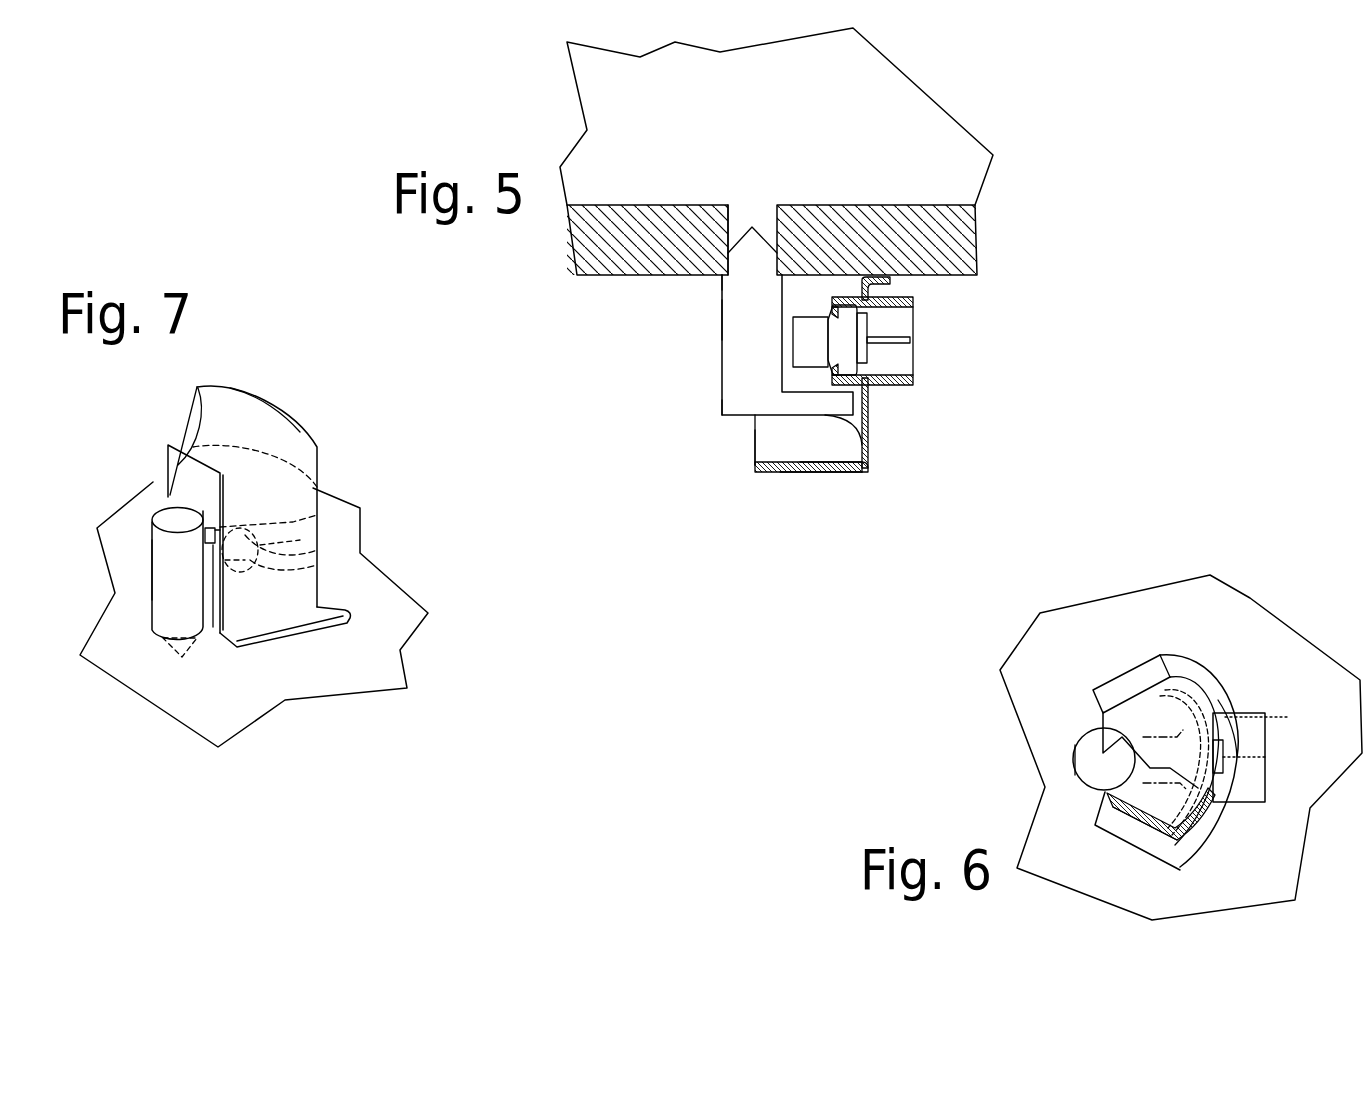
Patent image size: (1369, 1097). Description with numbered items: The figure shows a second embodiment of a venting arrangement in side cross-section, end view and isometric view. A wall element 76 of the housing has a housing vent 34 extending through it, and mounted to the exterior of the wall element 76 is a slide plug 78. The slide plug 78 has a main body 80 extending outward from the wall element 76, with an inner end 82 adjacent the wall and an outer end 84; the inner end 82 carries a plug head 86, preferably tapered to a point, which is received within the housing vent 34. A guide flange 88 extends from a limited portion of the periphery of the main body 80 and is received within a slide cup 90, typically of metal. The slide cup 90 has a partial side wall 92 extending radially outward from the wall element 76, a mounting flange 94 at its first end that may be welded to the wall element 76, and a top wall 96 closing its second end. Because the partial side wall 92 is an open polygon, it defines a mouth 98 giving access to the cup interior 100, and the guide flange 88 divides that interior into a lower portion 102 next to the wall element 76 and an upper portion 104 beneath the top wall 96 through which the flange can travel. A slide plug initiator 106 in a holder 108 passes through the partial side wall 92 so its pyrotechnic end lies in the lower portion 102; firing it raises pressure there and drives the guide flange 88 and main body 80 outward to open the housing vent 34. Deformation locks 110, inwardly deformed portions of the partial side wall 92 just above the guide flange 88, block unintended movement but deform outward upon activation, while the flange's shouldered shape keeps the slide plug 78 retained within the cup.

In FIG. 5, the housing vent 34 is at (730, 227).
In FIG. 5, the wall element 76 is at (900, 204).
In FIG. 7, the wall element 76 is at (162, 685).
In FIG. 6, the wall element 76 is at (1257, 643).
In FIG. 5, the slide plug 78 is at (722, 358).
In FIG. 7, the slide plug 78 is at (167, 605).
In FIG. 6, the slide plug 78 is at (1073, 752).
In FIG. 5, the main body 80 is at (722, 320).
In FIG. 7, the main body 80 is at (167, 560).
In FIG. 6, the main body 80 is at (1073, 767).
In FIG. 5, the inner end 82 is at (722, 283).
In FIG. 5, the outer end 84 is at (722, 412).
In FIG. 5, the plug head 86 is at (762, 233).
In FIG. 5, the guide flange 88 is at (853, 440).
In FIG. 7, the guide flange 88 is at (202, 503).
In FIG. 6, the guide flange 88 is at (1160, 793).
In FIG. 5, the slide cup 90 is at (863, 467).
In FIG. 6, the slide cup 90 is at (1207, 695).
In FIG. 5, the partial side wall 92 is at (873, 413).
In FIG. 7, the partial side wall 92 is at (303, 473).
In FIG. 6, the partial side wall 92 is at (1195, 840).
In FIG. 5, the mounting flange 94 is at (890, 288).
In FIG. 7, the mounting flange 94 is at (290, 623).
In FIG. 6, the mounting flange 94 is at (1160, 670).
In FIG. 5, the top wall 96 is at (825, 470).
In FIG. 7, the top wall 96 is at (257, 412).
In FIG. 6, the top wall 96 is at (1170, 713).
In FIG. 5, the mouth 98 is at (755, 452).
In FIG. 7, the mouth 98 is at (170, 465).
In FIG. 6, the mouth 98 is at (1097, 713).
In FIG. 5, the cup interior 100 is at (778, 440).
In FIG. 6, the cup interior 100 is at (1173, 827).
In FIG. 5, the lower portion 102 is at (813, 293).
In FIG. 7, the lower portion 102 is at (215, 585).
In FIG. 5, the upper portion 104 is at (820, 450).
In FIG. 7, the upper portion 104 is at (198, 388).
In FIG. 5, the slide plug initiator 106 is at (855, 338).
In FIG. 7, the slide plug initiator 106 is at (330, 570).
In FIG. 6, the slide plug initiator 106 is at (1290, 717).
In FIG. 5, the holder 108 is at (893, 370).
In FIG. 7, the holder 108 is at (317, 547).
In FIG. 6, the holder 108 is at (1257, 783).
In FIG. 5, the deformation lock 110 is at (793, 420).
In FIG. 6, the deformation lock 110 is at (1103, 797).